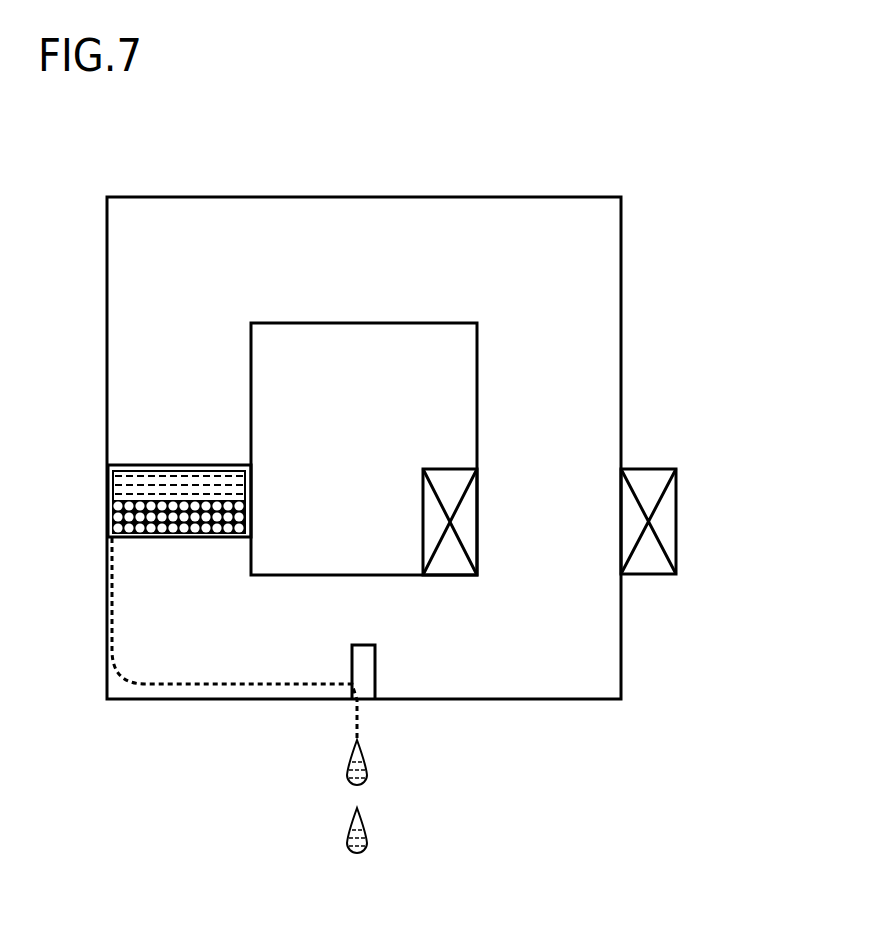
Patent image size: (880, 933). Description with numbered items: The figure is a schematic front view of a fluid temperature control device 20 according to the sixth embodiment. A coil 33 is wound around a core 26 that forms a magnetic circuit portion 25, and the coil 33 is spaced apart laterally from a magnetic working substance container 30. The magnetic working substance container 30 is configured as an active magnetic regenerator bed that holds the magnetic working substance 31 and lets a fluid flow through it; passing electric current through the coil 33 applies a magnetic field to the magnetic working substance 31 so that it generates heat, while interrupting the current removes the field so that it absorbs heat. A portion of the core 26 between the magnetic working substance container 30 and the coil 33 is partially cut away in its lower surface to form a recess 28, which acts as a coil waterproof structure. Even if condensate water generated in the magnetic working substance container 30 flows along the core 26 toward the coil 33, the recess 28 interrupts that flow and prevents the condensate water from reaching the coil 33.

The fluid temperature control device 20 is at (223, 173).
The magnetic circuit portion 25 is at (456, 196).
The core 26 is at (560, 197).
The recess 28 is at (367, 692).
The magnetic working substance container 30 is at (169, 511).
The magnetic working substance 31 is at (245, 515).
The coil 33 is at (677, 521).